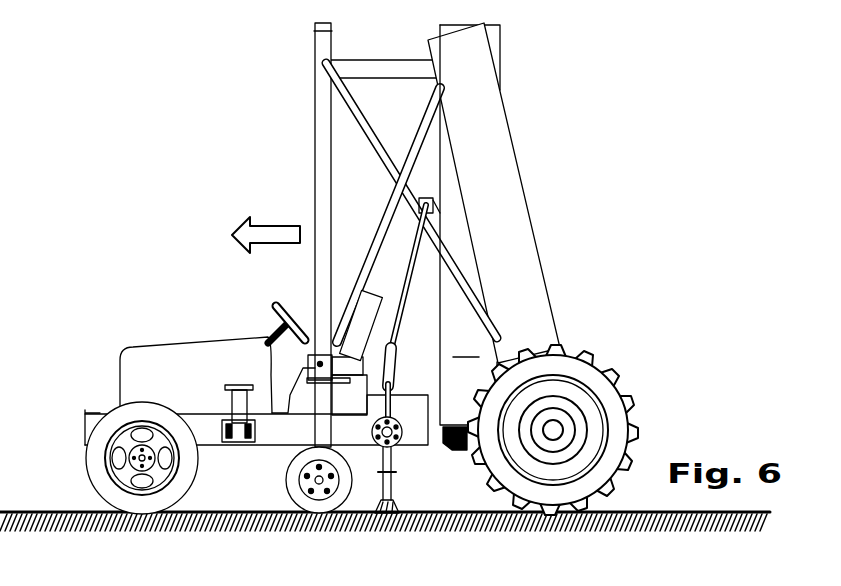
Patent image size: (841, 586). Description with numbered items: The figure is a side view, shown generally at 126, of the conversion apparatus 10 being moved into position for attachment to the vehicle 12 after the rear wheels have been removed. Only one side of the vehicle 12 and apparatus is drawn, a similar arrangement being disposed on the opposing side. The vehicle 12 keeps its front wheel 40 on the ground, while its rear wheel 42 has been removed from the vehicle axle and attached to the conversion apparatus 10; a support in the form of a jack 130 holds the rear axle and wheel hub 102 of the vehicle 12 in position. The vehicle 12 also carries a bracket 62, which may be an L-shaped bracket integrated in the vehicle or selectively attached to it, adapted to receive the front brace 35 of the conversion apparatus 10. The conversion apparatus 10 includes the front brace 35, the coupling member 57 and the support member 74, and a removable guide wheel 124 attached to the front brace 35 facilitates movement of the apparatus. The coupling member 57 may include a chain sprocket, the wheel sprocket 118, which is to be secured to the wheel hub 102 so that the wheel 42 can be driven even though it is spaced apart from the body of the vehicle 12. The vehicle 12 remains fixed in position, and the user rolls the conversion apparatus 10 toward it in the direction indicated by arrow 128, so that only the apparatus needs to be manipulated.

The conversion apparatus 10 is at (530, 144).
The vehicle 12 is at (160, 331).
The front brace 35 is at (315, 138).
The front wheel 40 is at (90, 462).
The rear wheel 42 is at (617, 420).
The coupling member 57 is at (465, 344).
The bracket 62 is at (230, 398).
The support member 74 is at (528, 250).
The wheel hub 102 is at (400, 447).
The wheel sprocket 118 is at (458, 455).
The guide wheel 124 is at (290, 482).
The conversion apparatus positioned for attachment 126 is at (168, 190).
The arrow 128 is at (277, 227).
The jack 130 is at (375, 487).